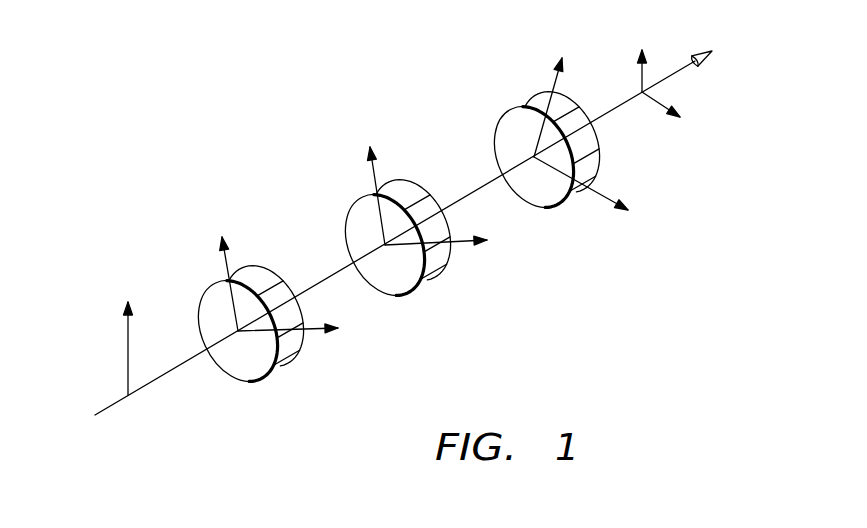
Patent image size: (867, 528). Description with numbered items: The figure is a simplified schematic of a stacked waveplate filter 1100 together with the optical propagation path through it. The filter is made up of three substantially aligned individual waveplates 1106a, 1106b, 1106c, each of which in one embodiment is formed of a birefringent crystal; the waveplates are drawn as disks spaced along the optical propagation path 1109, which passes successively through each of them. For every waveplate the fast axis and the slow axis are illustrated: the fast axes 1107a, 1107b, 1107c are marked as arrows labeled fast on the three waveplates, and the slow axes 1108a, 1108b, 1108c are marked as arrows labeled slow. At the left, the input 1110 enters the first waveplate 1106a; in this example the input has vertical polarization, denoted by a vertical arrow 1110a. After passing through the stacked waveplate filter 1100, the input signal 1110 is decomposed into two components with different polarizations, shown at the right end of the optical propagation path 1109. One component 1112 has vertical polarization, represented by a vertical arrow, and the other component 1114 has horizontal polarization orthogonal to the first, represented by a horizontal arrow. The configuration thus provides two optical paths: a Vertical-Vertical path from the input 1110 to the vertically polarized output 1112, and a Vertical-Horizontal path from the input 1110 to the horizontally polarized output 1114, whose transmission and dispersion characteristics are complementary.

The stacked waveplate filter 1100 is at (240, 85).
The first waveplate 1106a is at (290, 256).
The second waveplate 1106b is at (440, 170).
The third waveplate 1106c is at (599, 162).
The fast axis of first waveplate 1107a is at (222, 257).
The fast axis of second waveplate 1107b is at (372, 165).
The fast axis of third waveplate 1107c is at (556, 78).
The slow axis of first waveplate 1108a is at (314, 331).
The slow axis of second waveplate 1108b is at (465, 248).
The slow axis of third waveplate 1108c is at (602, 198).
The optical propagation path 1109 is at (143, 390).
The input 1110 is at (93, 379).
The vertical arrow 1110a is at (128, 353).
The vertically polarized output component 1112 is at (641, 54).
The horizontally polarized output component 1114 is at (688, 112).